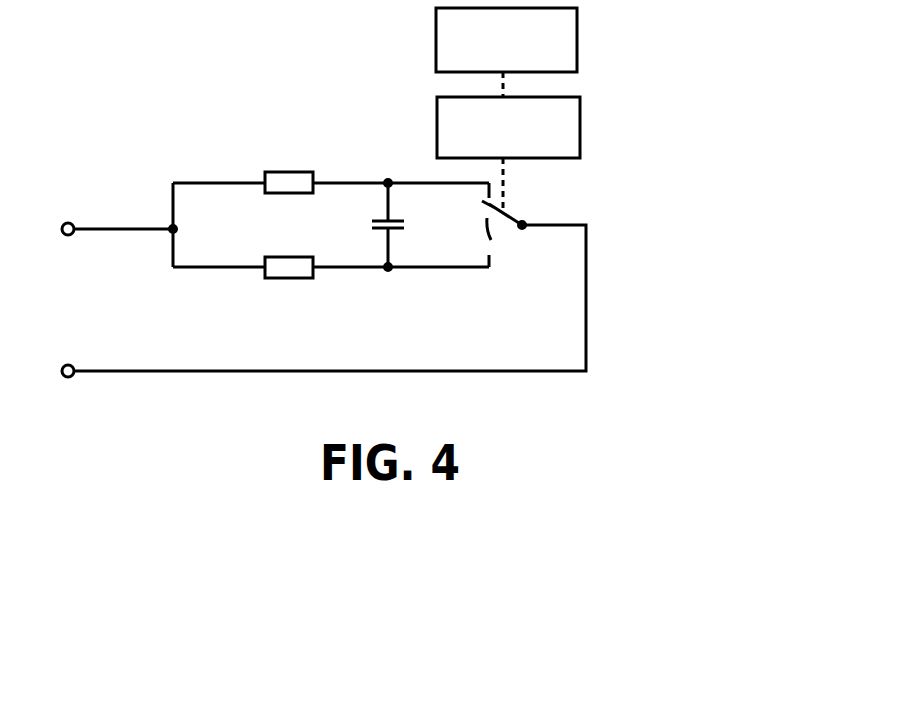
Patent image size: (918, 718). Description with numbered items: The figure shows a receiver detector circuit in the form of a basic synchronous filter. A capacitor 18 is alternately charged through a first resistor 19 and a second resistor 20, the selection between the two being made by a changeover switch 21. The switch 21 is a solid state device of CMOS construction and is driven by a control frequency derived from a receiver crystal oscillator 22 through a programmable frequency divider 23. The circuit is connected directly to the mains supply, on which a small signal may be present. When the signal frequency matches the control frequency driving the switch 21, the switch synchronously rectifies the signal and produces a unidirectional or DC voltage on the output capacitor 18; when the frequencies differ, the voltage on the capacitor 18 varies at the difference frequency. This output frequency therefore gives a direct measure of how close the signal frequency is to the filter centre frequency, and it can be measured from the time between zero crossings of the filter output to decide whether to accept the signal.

The capacitor 18 is at (380, 220).
The resistor 19 is at (301, 181).
The resistor 20 is at (278, 267).
The changeover switch 21 is at (511, 222).
The receiver crystal oscillator 22 is at (434, 29).
The programmable frequency divider 23 is at (580, 113).